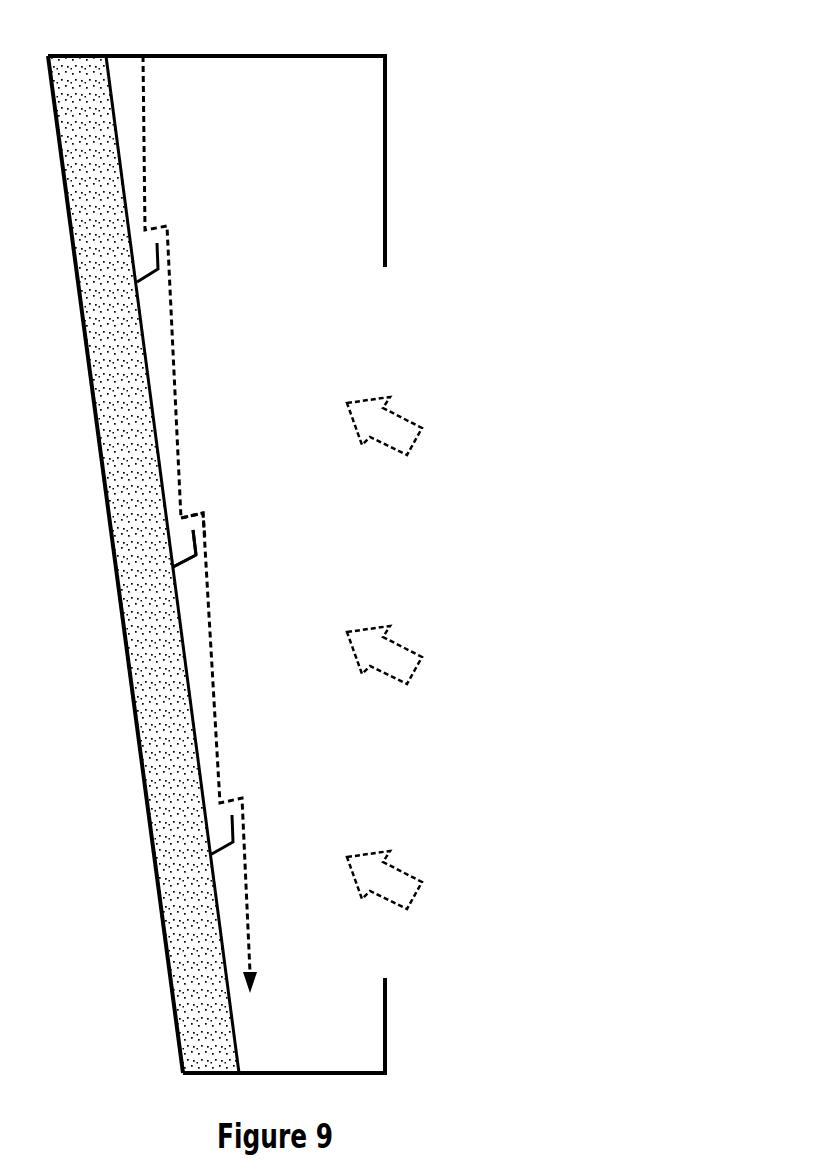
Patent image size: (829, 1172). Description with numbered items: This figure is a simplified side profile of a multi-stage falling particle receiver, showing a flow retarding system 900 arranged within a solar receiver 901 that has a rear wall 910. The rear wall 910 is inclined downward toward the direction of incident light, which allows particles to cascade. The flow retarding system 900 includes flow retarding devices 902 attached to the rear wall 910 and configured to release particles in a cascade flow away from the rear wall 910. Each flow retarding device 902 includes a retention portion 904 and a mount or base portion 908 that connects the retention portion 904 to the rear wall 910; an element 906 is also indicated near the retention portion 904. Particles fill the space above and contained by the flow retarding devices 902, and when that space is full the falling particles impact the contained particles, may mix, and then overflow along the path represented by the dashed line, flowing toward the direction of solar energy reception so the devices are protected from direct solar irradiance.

The solar receiver 901 is at (283, 54).
The flow retarding system 900 is at (186, 237).
The rear wall 910 is at (147, 360).
The tab portion 906 is at (206, 528).
The retention portion 904 is at (198, 547).
The base portion 908 is at (191, 564).
The flow retarding device 902 is at (187, 576).